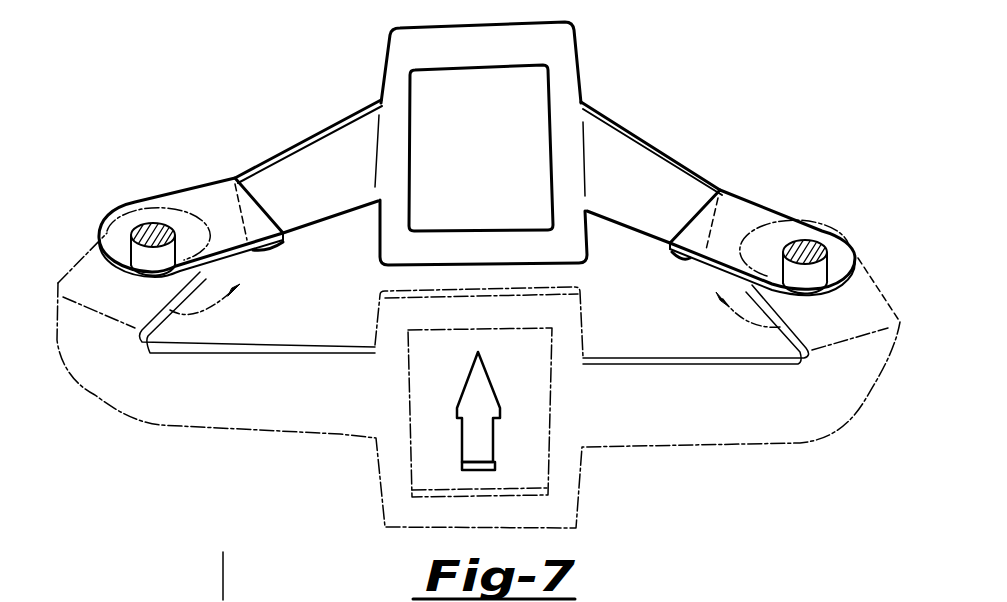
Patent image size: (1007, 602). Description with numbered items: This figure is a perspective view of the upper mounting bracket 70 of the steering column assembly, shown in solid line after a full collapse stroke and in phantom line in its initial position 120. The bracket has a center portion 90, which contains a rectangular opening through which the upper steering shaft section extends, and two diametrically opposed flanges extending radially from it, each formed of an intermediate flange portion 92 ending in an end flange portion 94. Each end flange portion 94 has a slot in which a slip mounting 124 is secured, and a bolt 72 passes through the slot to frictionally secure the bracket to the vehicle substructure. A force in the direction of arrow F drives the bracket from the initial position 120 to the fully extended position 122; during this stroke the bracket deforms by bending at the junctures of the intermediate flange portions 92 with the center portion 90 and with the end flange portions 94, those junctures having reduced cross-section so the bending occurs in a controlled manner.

The upper mounting bracket 70 is at (287, 146).
The bolts 72 is at (137, 203).
The center portion 90 is at (577, 58).
The intermediate flange portion 92 is at (652, 142).
The end flange portion 94 is at (760, 200).
The initial position 120 is at (352, 452).
The fully extended position 122 is at (331, 72).
The slip mountings 124 is at (812, 290).